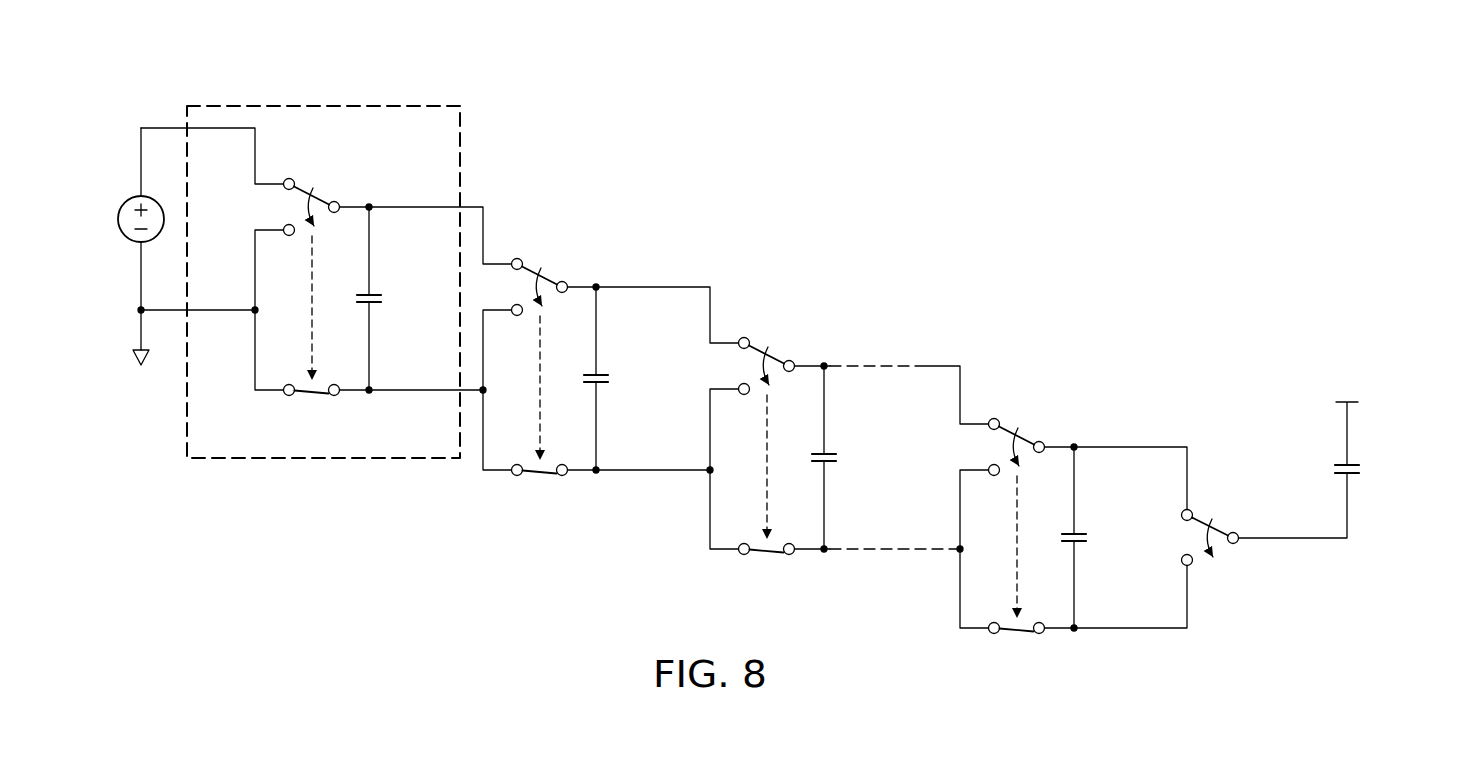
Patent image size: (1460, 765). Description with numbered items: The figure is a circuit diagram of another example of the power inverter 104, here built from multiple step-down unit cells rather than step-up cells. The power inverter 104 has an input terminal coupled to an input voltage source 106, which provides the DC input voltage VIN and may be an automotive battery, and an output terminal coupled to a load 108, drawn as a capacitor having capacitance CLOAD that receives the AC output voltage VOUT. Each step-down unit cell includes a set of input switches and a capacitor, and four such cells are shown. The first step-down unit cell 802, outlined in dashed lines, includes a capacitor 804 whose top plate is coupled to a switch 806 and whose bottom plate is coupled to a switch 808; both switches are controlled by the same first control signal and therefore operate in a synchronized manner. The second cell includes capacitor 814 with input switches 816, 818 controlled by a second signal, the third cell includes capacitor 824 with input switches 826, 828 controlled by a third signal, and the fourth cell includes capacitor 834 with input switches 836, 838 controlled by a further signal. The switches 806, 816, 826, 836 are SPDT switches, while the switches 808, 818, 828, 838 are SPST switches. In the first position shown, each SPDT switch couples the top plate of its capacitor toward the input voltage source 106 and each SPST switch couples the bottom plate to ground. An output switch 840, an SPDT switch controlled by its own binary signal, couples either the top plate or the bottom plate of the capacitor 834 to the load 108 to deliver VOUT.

The power inverter 104 is at (832, 112).
The input voltage source 106 is at (129, 242).
The load 108 is at (1362, 470).
The first step-down unit cell 802 is at (266, 101).
The capacitor 804 is at (381, 300).
The input switch 806 is at (312, 205).
The input switch 808 is at (300, 397).
The capacitor 814 is at (608, 380).
The input switch 816 is at (545, 280).
The input switch 818 is at (530, 476).
The capacitor 824 is at (836, 459).
The input switch 826 is at (773, 360).
The input switch 828 is at (755, 553).
The capacitor 834 is at (1087, 540).
The input switch 836 is at (1021, 441).
The input switch 838 is at (1008, 633).
The output switch 840 is at (1190, 533).